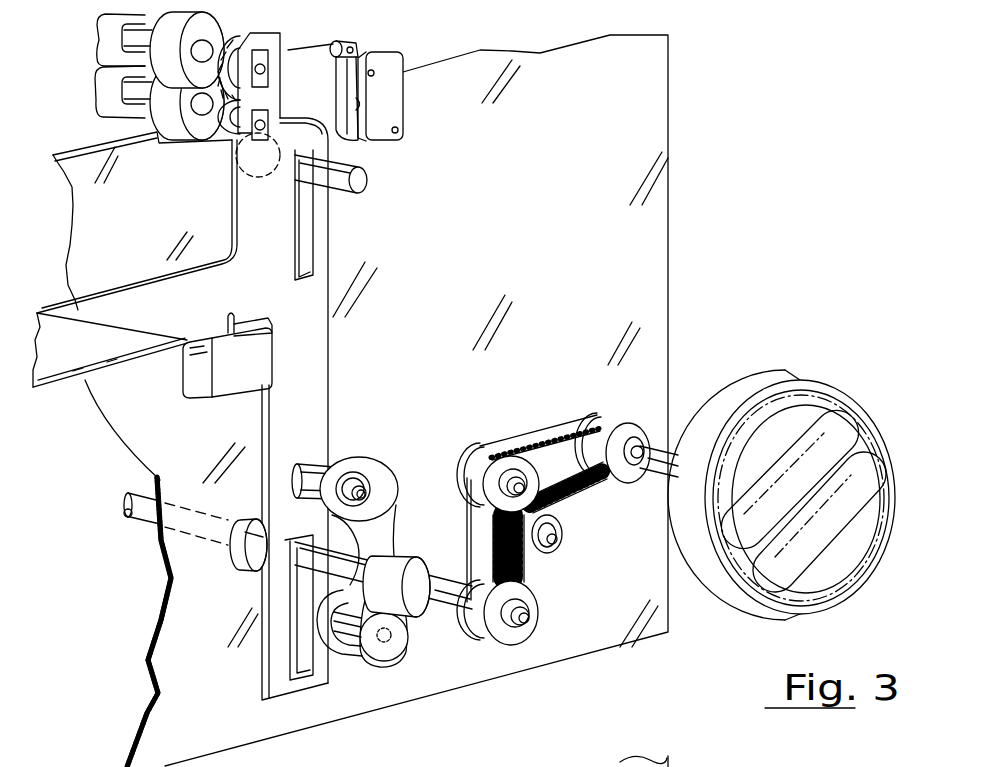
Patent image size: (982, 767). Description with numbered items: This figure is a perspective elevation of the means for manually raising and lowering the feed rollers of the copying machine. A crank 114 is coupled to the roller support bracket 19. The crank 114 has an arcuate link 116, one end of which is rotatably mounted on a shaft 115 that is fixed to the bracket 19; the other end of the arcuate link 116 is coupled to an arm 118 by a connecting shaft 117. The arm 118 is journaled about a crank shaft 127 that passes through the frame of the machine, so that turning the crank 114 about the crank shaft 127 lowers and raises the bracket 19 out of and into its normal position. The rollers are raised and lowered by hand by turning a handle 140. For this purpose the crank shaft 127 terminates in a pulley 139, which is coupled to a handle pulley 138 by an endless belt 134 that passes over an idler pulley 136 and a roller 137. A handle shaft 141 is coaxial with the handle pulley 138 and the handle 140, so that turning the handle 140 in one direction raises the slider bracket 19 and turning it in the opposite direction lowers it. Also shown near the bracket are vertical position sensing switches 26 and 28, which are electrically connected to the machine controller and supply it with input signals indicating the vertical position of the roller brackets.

The bracket 19 is at (290, 72).
The vertical position sensing switch 26 is at (400, 113).
The vertical position sensing switch 28 is at (190, 377).
The crank 114 is at (386, 542).
The shaft 115 is at (312, 473).
The arcuate link 116 is at (392, 532).
The connecting shaft 117 is at (350, 656).
The arm 118 is at (380, 661).
The crank shaft 127 is at (437, 613).
The endless belt 134 is at (545, 447).
The idler pulley 136 is at (513, 462).
The roller 137 is at (553, 555).
The handle pulley 138 is at (645, 422).
The pulley 139 is at (533, 643).
The handle 140 is at (777, 383).
The handle shaft 141 is at (663, 490).